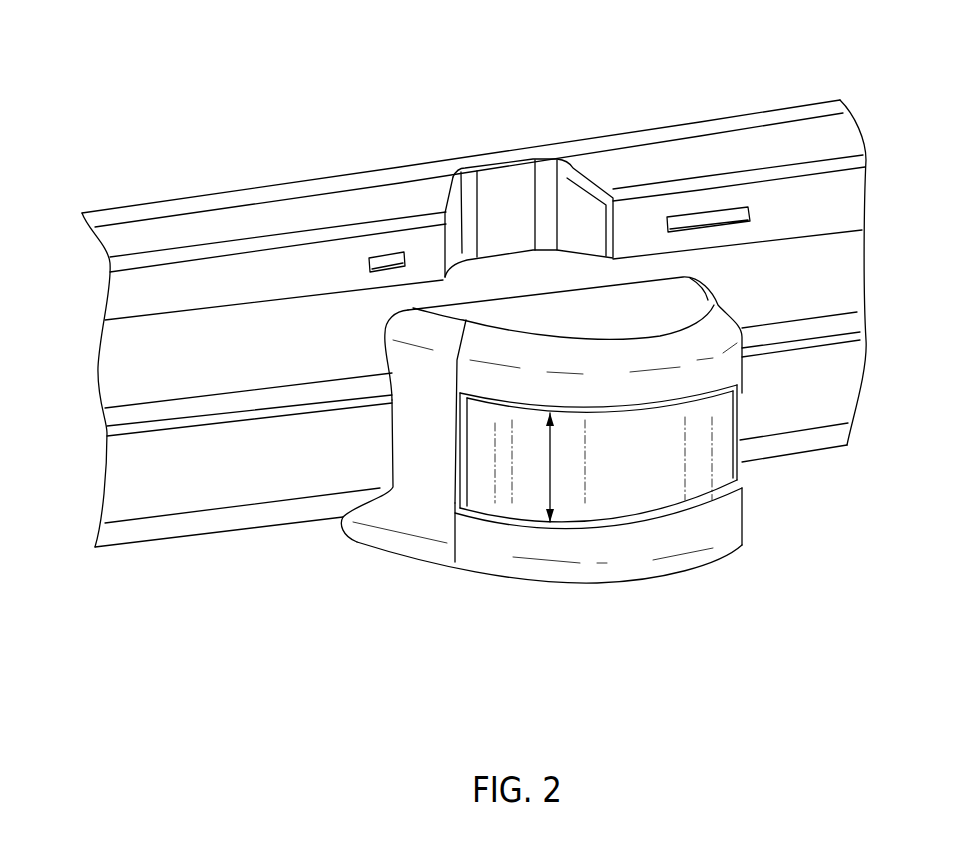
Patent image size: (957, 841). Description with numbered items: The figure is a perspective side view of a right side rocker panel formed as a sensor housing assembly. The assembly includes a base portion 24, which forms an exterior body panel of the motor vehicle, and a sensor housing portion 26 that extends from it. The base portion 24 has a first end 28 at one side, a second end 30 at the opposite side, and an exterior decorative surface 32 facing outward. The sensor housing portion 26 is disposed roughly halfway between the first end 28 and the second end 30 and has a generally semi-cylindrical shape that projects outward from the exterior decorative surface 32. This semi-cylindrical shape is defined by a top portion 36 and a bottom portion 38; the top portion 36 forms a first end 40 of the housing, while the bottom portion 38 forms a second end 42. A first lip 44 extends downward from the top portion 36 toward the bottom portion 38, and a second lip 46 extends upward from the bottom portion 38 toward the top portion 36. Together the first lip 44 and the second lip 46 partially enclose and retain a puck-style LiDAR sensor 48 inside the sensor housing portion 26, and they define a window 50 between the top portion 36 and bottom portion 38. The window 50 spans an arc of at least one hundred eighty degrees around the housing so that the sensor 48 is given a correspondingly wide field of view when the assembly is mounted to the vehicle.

The base portion 24 is at (248, 198).
The sensor housing portion 26 is at (578, 485).
The first end 28 is at (53, 173).
The second end 30 is at (877, 72).
The exterior decorative surface 32 is at (120, 378).
The top portion 36 is at (723, 325).
The bottom portion 38 is at (630, 583).
The first end 40 is at (606, 321).
The second end 42 is at (427, 509).
The first lip 44 is at (710, 380).
The second lip 46 is at (693, 533).
The sensor 48 is at (720, 478).
The window 50 is at (548, 470).